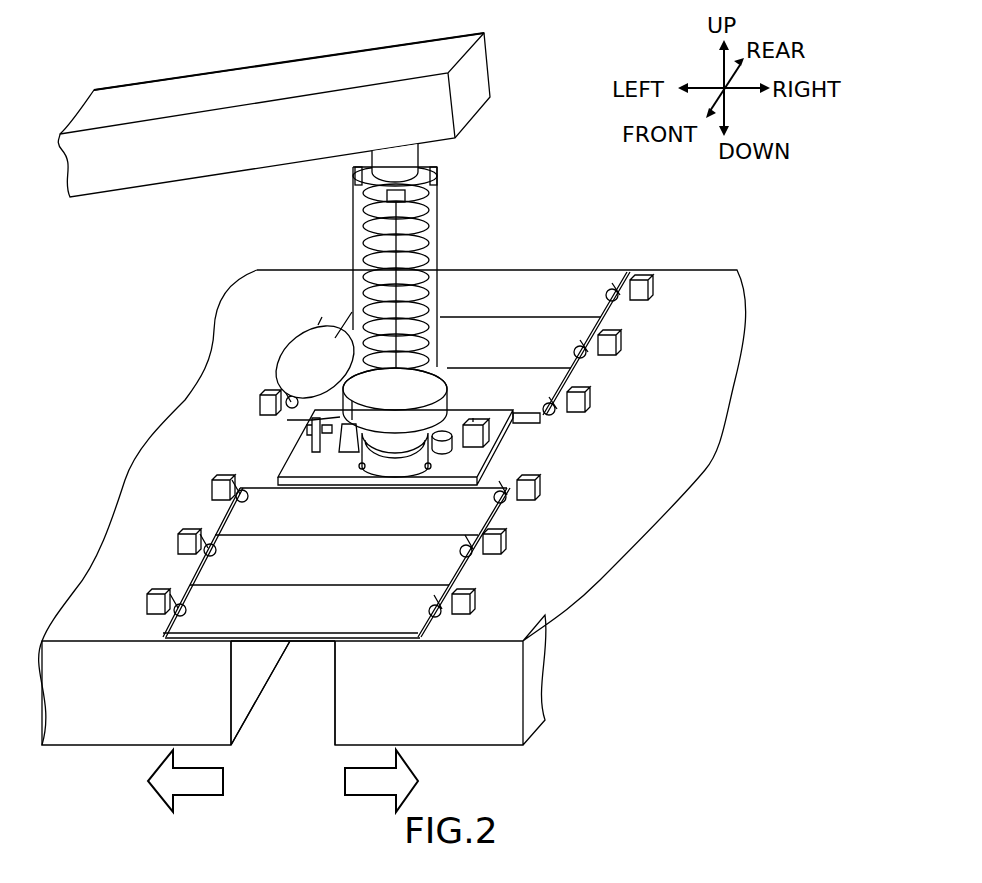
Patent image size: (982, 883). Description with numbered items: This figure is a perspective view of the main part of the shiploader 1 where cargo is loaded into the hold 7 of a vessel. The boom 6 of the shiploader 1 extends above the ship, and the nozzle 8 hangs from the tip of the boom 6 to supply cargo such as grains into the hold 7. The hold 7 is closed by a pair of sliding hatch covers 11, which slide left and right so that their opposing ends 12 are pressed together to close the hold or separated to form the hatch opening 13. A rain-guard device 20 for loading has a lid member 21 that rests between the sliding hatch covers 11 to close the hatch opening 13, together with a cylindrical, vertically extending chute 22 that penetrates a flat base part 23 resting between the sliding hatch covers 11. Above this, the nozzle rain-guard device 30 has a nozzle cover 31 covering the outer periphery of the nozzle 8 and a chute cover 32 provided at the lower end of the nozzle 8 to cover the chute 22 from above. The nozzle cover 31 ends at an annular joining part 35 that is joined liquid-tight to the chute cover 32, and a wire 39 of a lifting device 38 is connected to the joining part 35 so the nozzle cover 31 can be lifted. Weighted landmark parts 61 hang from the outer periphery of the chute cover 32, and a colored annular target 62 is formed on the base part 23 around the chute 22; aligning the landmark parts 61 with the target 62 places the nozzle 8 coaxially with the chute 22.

The shiploader 1 is at (190, 52).
The boom 6 is at (362, 58).
The nozzle 8 is at (420, 150).
The lifting device 38 is at (351, 178).
The nozzle rain-guard device 30 is at (448, 195).
The wire 39 is at (352, 222).
The nozzle cover 31 is at (437, 226).
The rain-guard device for loading 20 is at (542, 222).
The chute cover 32 is at (443, 360).
The joining part 35 is at (367, 382).
The chute 22 is at (432, 458).
The base part 23 is at (493, 452).
The target 62 is at (343, 462).
The landmark part 61 is at (362, 467).
The lid member 21 is at (386, 619).
The sliding hatch cover 11 is at (435, 706).
The opposing end 12 is at (333, 712).
The hatch opening 13 is at (288, 747).
The hold 7 is at (334, 816).